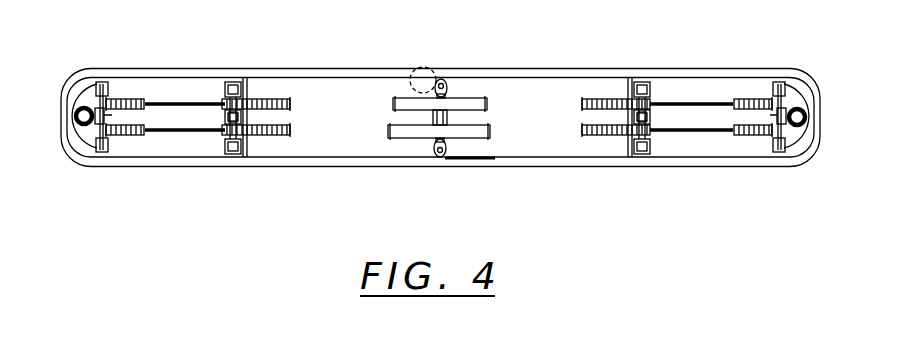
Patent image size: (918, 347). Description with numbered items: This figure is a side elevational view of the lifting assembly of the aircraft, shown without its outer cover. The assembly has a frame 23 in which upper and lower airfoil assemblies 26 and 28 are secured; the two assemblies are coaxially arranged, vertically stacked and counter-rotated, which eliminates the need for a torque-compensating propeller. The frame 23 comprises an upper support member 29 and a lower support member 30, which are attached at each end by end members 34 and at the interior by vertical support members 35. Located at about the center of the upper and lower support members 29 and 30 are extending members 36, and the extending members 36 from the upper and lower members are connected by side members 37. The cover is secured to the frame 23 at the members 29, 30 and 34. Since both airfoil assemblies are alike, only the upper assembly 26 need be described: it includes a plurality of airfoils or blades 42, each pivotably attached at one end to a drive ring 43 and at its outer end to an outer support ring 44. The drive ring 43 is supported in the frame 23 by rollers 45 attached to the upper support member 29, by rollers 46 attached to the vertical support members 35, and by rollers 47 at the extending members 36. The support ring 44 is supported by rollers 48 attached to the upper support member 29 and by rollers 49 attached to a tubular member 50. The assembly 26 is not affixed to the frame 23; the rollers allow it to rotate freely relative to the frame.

The frame 23 is at (628, 68).
The upper airfoil assembly 26 is at (473, 98).
The lower airfoil assembly 28 is at (474, 142).
The upper support member 29 is at (325, 68).
The lower support member 30 is at (358, 168).
The end member 34 is at (60, 95).
The vertical support member 35 is at (249, 90).
The extending member 36 is at (420, 67).
The side member 37 is at (446, 86).
The airfoil 42 is at (178, 102).
The drive ring 43 is at (289, 101).
The outer support ring 44 is at (126, 98).
The roller 45 is at (234, 83).
The roller 46 is at (226, 118).
The roller 47 is at (447, 116).
The roller 48 is at (95, 78).
The roller 49 is at (102, 117).
The tubular member 50 is at (84, 125).